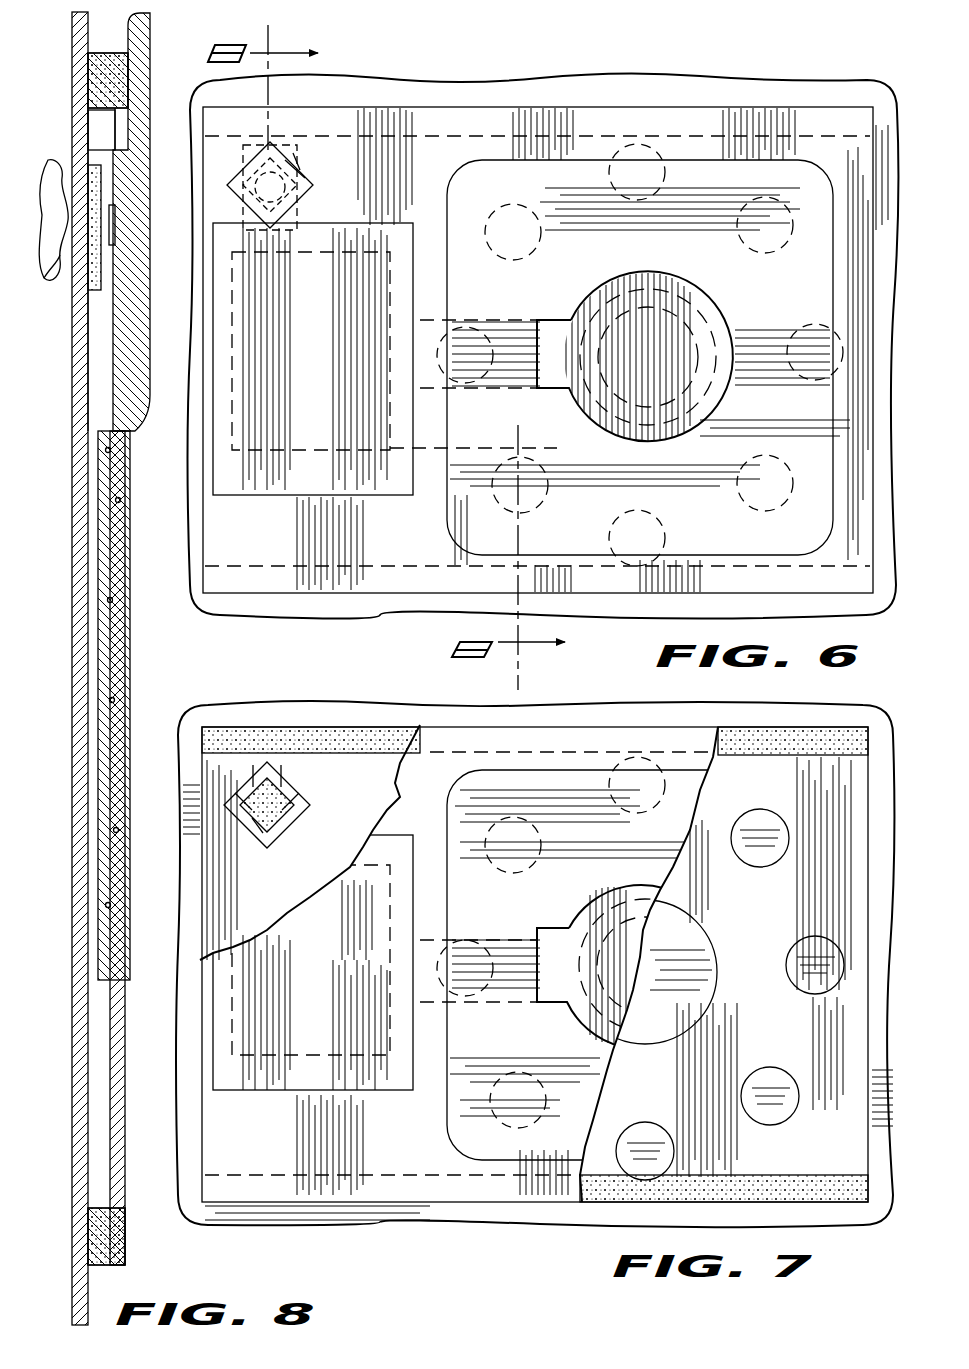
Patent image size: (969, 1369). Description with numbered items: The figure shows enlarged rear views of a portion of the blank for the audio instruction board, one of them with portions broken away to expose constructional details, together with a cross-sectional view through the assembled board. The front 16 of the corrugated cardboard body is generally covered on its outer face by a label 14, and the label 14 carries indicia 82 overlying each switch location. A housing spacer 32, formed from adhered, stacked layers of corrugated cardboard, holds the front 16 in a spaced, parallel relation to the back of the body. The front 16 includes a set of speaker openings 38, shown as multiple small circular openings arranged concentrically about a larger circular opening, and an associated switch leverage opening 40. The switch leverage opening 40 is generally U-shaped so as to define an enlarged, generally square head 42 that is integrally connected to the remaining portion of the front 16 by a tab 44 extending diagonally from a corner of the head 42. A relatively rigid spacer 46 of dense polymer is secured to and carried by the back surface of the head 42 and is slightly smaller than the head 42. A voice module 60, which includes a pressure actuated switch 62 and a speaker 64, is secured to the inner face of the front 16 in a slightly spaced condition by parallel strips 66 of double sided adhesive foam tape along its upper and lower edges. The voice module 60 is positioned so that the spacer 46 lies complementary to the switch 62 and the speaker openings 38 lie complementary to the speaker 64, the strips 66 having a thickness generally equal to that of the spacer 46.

In FIG. 8, the label 14 is at (70, 686).
In FIG. 8, the front 16 is at (71, 595).
In FIG. 6, the front 16 is at (597, 90).
In FIG. 7, the front 16 is at (390, 1215).
In FIG. 8, the housing spacer 32 is at (150, 185).
In FIG. 8, the speaker openings 38 is at (88, 1046).
In FIG. 7, the speaker openings 38 is at (712, 968).
In FIG. 8, the switch leverage openings 40 is at (80, 342).
In FIG. 7, the switch leverage openings 40 is at (288, 818).
In FIG. 6, the head 42 is at (277, 222).
In FIG. 7, the head 42 is at (263, 835).
In FIG. 8, the tab 44 is at (88, 127).
In FIG. 7, the tab 44 is at (268, 770).
In FIG. 8, the spacer 46 is at (88, 278).
In FIG. 7, the spacer 46 is at (282, 798).
In FIG. 8, the voice module 60 is at (140, 90).
In FIG. 6, the voice module 60 is at (828, 105).
In FIG. 7, the voice module 60 is at (545, 712).
In FIG. 8, the pressure actuated switch 62 is at (116, 228).
In FIG. 6, the pressure actuated switch 62 is at (293, 178).
In FIG. 6, the speaker 64 is at (822, 274).
In FIG. 8, the strips 66 is at (137, 52).
In FIG. 7, the strips 66 is at (335, 740).
In FIG. 8, the indicia 82 is at (47, 163).